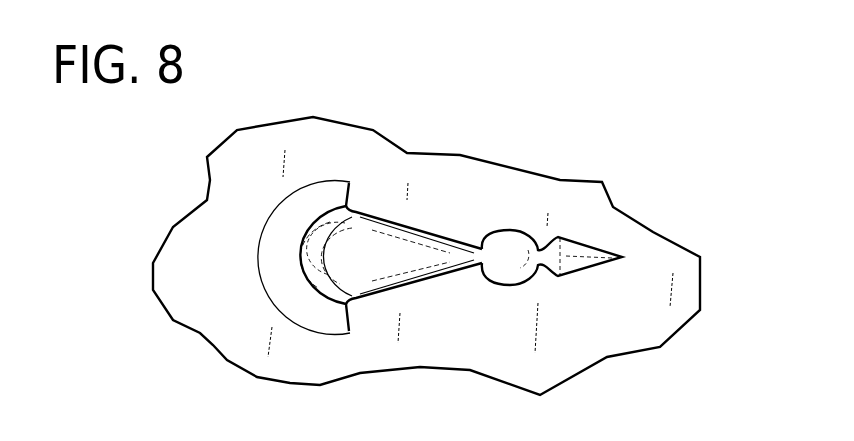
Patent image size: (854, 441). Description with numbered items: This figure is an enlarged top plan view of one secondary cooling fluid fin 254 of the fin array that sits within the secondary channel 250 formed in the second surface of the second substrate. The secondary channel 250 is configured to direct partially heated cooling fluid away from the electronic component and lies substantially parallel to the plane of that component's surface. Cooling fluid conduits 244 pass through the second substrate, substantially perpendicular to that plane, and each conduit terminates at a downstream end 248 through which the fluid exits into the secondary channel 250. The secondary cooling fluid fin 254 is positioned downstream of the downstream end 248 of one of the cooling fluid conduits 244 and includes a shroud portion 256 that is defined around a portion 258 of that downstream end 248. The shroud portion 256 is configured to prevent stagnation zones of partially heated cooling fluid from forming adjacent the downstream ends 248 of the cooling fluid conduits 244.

The secondary channel 250 is at (485, 210).
The secondary cooling fluid fin 254 is at (567, 258).
The shroud portion 256 is at (275, 260).
The portion of downstream end 258 is at (315, 215).
The downstream end 248 is at (373, 263).
The cooling fluid conduit 244 is at (312, 304).